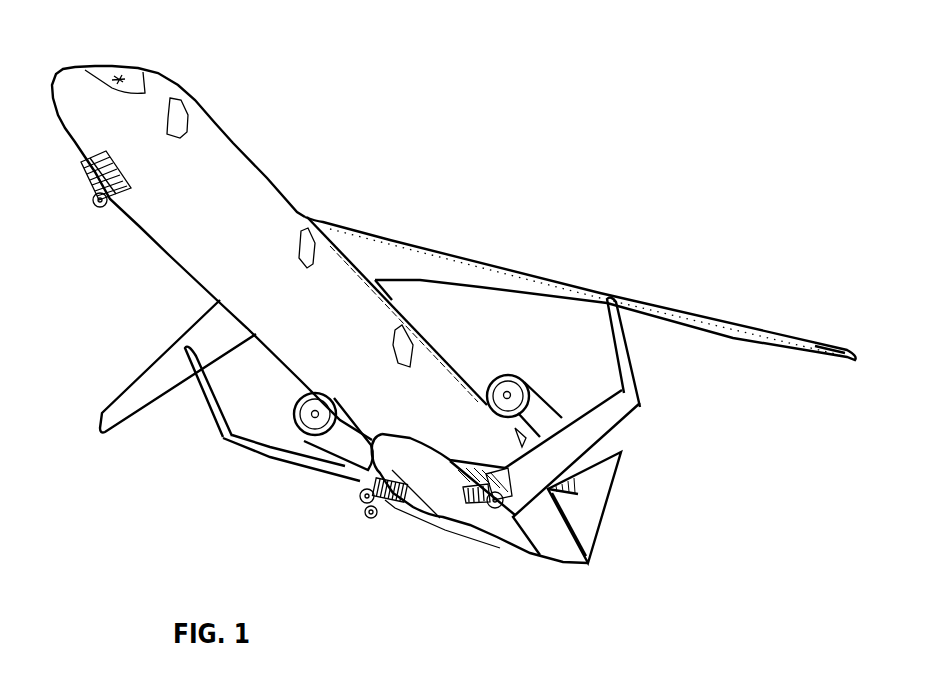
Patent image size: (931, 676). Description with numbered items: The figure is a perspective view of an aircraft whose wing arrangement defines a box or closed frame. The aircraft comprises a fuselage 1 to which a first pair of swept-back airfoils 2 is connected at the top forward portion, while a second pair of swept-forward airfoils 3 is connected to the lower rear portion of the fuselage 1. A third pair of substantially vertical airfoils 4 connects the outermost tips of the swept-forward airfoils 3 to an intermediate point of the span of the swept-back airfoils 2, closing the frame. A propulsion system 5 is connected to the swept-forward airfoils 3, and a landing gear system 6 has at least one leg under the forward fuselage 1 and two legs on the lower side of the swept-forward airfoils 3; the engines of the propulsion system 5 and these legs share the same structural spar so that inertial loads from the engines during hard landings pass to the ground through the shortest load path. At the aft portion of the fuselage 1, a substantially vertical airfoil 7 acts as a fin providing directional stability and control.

The fuselage 1 is at (200, 127).
The first pair of swept-back airfoils 2 is at (380, 257).
The second pair of swept-forward airfoils 3 is at (468, 472).
The third pair of substantially vertical airfoils 4 is at (206, 403).
The propulsion system 5 is at (538, 370).
The landing gear system 6 is at (93, 197).
The substantially vertical airfoil 7 is at (592, 508).